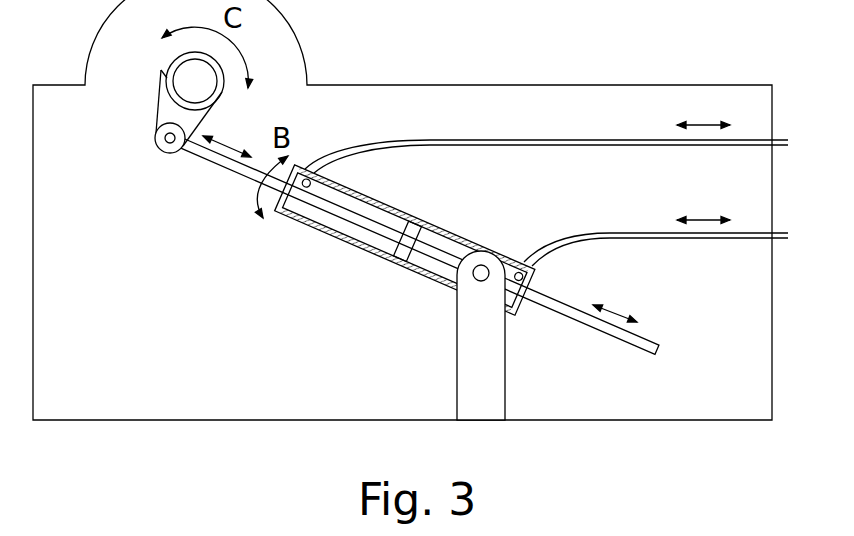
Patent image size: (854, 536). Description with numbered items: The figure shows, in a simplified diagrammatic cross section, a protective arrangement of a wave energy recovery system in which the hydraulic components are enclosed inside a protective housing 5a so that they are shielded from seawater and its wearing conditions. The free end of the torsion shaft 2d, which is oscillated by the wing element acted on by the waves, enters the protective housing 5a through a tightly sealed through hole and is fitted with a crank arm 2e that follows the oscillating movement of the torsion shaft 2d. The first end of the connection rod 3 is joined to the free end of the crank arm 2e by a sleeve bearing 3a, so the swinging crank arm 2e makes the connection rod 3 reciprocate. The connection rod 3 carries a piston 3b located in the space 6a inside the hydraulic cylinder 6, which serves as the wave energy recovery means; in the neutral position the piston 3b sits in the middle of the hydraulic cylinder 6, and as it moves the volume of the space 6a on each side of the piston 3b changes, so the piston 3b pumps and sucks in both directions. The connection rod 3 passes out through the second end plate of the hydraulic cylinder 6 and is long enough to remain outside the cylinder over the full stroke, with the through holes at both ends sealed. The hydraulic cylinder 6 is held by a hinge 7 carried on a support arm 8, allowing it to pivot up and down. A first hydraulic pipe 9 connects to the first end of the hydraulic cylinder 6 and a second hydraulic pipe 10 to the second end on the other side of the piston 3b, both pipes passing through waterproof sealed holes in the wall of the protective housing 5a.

The torsion shaft 2d is at (176, 78).
The crank arm 2e is at (167, 107).
The connection rod 3 is at (230, 167).
The sleeve bearing 3a is at (155, 148).
The piston 3b is at (398, 257).
The protective housing 5a is at (713, 100).
The hydraulic cylinder 6 is at (370, 287).
The space 6a is at (300, 210).
The hinge 7 is at (486, 266).
The support arm 8 is at (498, 390).
The first hydraulic pipe 9 is at (653, 143).
The second hydraulic pipe 10 is at (753, 238).